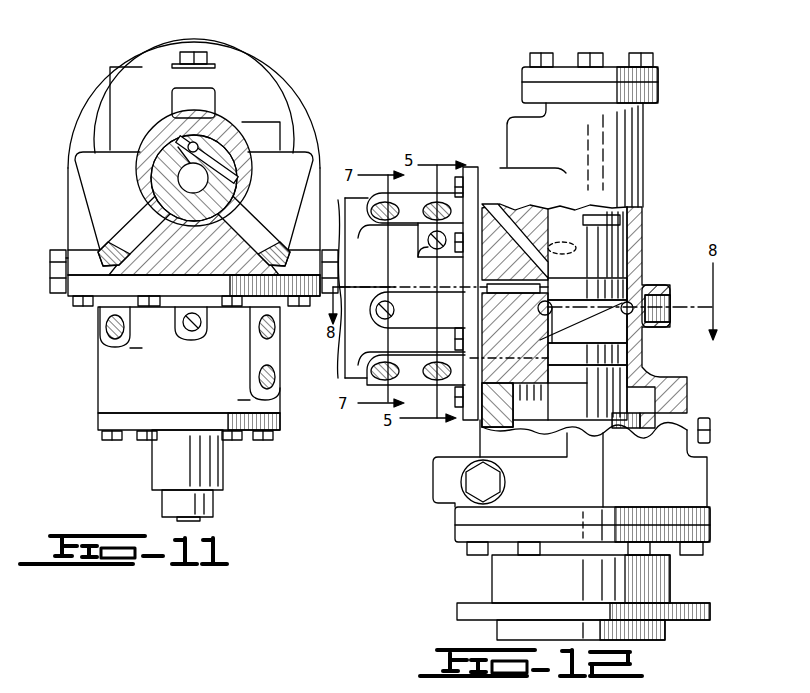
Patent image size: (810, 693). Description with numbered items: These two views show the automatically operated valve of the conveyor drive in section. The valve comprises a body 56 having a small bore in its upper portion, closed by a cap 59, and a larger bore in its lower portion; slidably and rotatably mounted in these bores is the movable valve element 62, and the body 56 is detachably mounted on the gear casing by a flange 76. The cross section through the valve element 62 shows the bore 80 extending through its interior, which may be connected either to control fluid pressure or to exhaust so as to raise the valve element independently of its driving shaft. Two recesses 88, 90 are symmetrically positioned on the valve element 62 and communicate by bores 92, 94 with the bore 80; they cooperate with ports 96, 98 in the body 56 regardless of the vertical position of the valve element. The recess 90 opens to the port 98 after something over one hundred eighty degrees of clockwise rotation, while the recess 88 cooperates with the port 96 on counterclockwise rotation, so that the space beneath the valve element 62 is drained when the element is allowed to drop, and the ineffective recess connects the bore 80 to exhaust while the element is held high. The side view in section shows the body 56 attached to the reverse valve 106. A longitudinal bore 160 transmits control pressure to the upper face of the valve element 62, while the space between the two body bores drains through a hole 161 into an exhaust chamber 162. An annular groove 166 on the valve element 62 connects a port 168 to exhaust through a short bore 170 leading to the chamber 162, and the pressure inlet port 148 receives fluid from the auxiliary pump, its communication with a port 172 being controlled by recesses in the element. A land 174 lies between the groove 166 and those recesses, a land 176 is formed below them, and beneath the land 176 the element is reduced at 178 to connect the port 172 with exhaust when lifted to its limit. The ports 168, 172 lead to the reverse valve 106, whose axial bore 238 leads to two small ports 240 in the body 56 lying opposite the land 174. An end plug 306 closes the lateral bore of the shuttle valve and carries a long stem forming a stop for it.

In FIG. 11, the bore 80 is at (193, 178).
In FIG. 11, the recess 88 is at (207, 162).
In FIG. 11, the recess 90 is at (177, 135).
In FIG. 11, the bore 92 is at (242, 142).
In FIG. 11, the bore 94 is at (178, 147).
In FIG. 11, the port 96 is at (247, 217).
In FIG. 11, the port 98 is at (148, 222).
In FIG. 11, the reverse valve 106 is at (191, 408).
In FIG. 12, the reverse valve 106 is at (401, 289).
In FIG. 11, the longitudinal bore 160 is at (194, 142).
In FIG. 12, the body 56 is at (571, 155).
In FIG. 12, the cap 59 is at (566, 67).
In FIG. 12, the movable valve element 62 is at (587, 392).
In FIG. 12, the flange 76 is at (687, 606).
In FIG. 12, the port 148 is at (640, 322).
In FIG. 12, the hole 161 is at (572, 342).
In FIG. 12, the chamber 162 is at (532, 209).
In FIG. 12, the annular groove 166 is at (630, 262).
In FIG. 12, the port 168 is at (550, 270).
In FIG. 12, the short bore 170 is at (587, 241).
In FIG. 12, the port 172 is at (662, 290).
In FIG. 12, the land 174 is at (587, 289).
In FIG. 12, the land 176 is at (538, 360).
In FIG. 12, the reduced portion 178 is at (567, 388).
In FIG. 12, the axial bore 238 is at (444, 288).
In FIG. 12, the small ports 240 is at (548, 317).
In FIG. 12, the end plug 306 is at (500, 470).